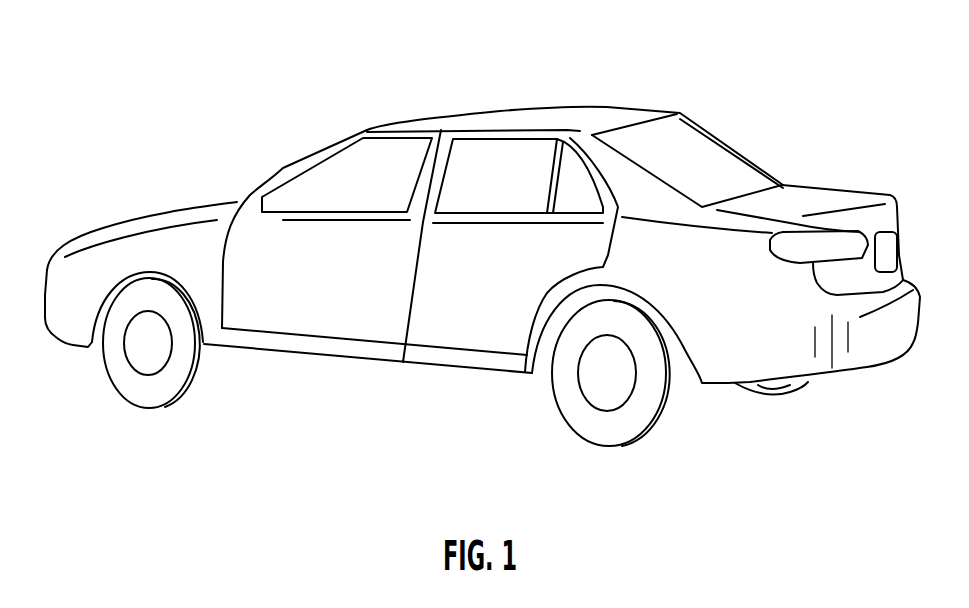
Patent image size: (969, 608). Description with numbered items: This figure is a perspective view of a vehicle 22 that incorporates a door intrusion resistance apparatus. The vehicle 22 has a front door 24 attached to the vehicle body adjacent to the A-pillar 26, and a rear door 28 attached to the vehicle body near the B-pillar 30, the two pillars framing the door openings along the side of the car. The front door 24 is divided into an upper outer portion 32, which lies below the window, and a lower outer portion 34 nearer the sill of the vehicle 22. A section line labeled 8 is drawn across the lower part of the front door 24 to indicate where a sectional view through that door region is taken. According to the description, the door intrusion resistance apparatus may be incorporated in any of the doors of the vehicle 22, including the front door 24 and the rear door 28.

The vehicle 22 is at (482, 249).
The A-pillar 26 is at (273, 177).
The B-pillar 30 is at (442, 128).
The upper outer portion 32 is at (264, 253).
The front door 24 is at (248, 298).
The lower outer portion 34 is at (287, 320).
The rear door 28 is at (468, 307).
The section line 8- 8 is at (327, 273).